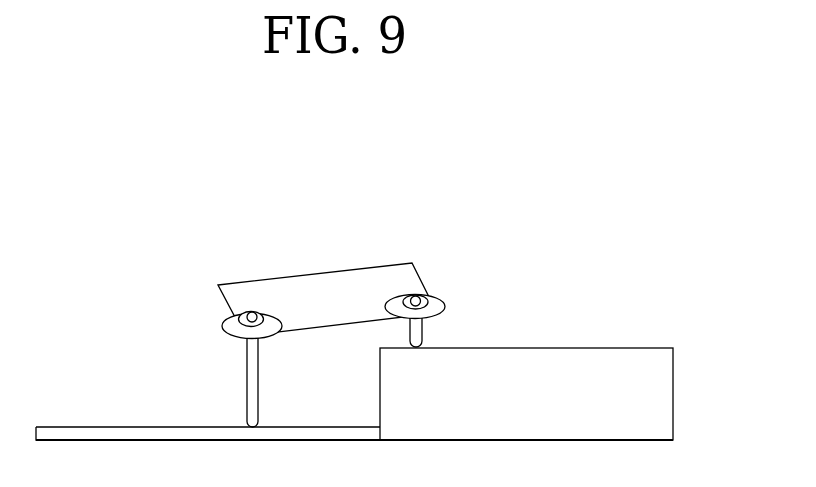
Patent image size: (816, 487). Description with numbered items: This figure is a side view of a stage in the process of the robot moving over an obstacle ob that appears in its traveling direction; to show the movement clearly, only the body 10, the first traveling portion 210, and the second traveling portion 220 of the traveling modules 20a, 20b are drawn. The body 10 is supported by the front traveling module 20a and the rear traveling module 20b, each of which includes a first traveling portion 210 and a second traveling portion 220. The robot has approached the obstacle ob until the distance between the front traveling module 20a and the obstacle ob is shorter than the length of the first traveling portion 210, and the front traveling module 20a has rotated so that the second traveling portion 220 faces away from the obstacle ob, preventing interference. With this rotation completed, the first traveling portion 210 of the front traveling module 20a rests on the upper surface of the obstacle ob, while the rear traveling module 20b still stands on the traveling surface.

The body 10 is at (328, 288).
The front traveling module 20a is at (450, 287).
The traveling module 20b is at (212, 317).
The first traveling portion 210 is at (252, 312).
The second traveling portion 220 is at (415, 297).
The obstacle ob is at (673, 392).